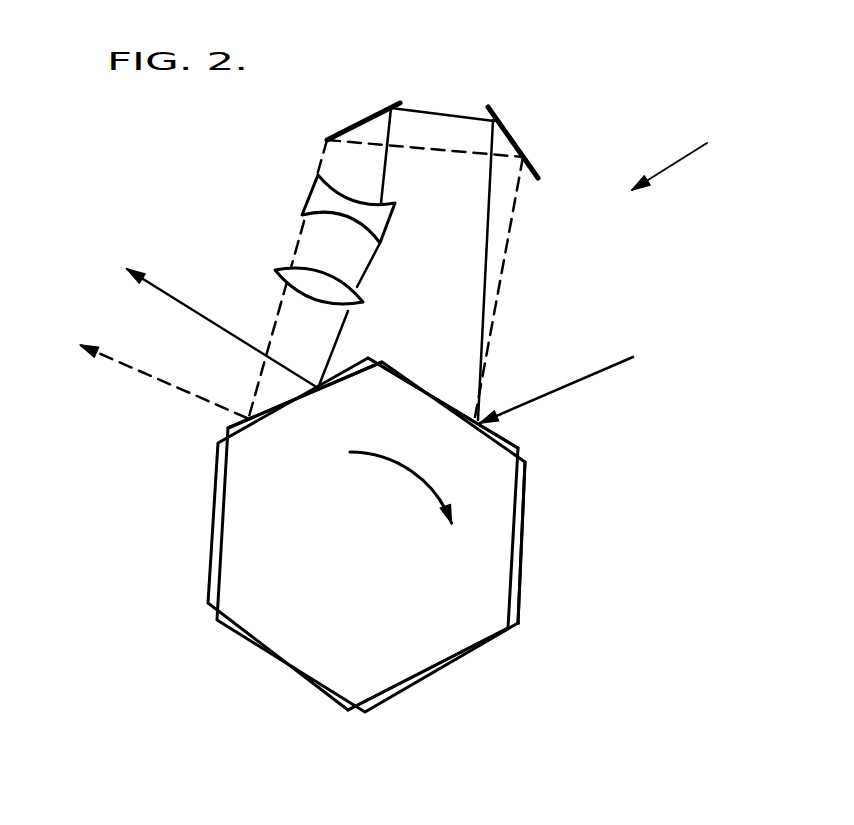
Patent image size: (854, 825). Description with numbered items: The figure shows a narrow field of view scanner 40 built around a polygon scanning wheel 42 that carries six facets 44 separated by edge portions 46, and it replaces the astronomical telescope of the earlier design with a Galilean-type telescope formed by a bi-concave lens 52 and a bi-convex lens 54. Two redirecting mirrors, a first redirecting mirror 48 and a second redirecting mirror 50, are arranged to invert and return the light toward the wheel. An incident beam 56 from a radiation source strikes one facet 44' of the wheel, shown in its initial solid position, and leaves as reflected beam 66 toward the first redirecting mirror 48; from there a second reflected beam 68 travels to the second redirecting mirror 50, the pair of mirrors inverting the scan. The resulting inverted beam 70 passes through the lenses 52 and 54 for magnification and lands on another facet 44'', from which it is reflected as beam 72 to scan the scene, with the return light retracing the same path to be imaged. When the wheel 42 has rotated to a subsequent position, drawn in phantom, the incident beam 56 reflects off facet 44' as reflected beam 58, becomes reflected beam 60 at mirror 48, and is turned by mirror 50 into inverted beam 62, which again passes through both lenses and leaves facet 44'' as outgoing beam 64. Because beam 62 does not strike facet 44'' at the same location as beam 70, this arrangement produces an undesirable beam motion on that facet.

The narrow field of view scanner 40 is at (685, 155).
The polygon scanning wheel 42 is at (492, 555).
The facets 44 is at (456, 589).
The facet 44' is at (470, 403).
The facet 44'' is at (317, 375).
The edge portions 46 is at (517, 625).
The first redirecting mirror 48 is at (525, 148).
The second redirecting mirror 50 is at (366, 120).
The bi-concave lens 52 is at (306, 200).
The bi-convex lens 54 is at (282, 266).
The incident beam 56 is at (596, 371).
The reflected beam 58 is at (500, 275).
The reflected beam 60 is at (443, 148).
The inverted beam 62 is at (255, 390).
The outgoing beam 64 is at (153, 378).
The reflected beam 66 is at (482, 317).
The second reflected beam 68 is at (434, 115).
The inverted beam 70 is at (388, 158).
The beam 72 is at (176, 300).